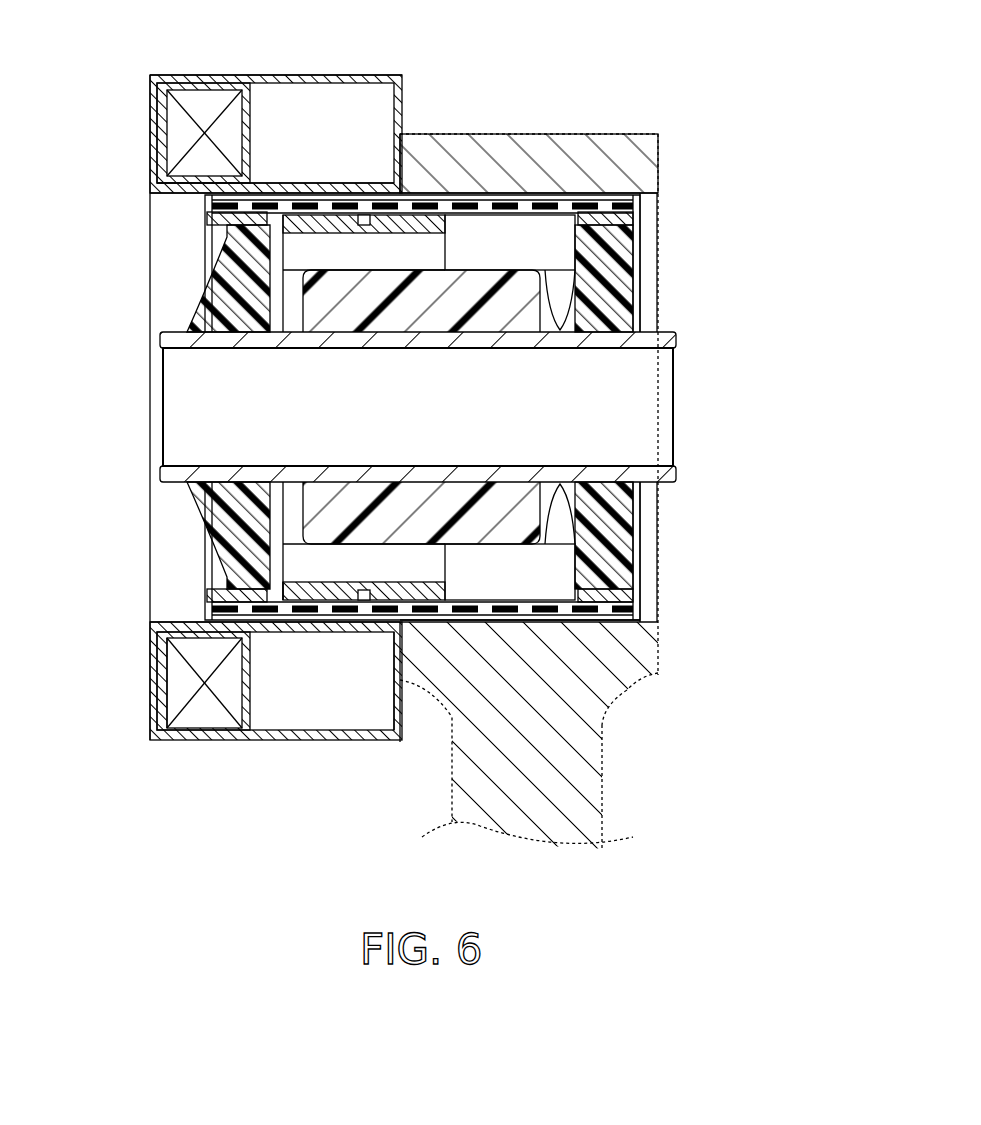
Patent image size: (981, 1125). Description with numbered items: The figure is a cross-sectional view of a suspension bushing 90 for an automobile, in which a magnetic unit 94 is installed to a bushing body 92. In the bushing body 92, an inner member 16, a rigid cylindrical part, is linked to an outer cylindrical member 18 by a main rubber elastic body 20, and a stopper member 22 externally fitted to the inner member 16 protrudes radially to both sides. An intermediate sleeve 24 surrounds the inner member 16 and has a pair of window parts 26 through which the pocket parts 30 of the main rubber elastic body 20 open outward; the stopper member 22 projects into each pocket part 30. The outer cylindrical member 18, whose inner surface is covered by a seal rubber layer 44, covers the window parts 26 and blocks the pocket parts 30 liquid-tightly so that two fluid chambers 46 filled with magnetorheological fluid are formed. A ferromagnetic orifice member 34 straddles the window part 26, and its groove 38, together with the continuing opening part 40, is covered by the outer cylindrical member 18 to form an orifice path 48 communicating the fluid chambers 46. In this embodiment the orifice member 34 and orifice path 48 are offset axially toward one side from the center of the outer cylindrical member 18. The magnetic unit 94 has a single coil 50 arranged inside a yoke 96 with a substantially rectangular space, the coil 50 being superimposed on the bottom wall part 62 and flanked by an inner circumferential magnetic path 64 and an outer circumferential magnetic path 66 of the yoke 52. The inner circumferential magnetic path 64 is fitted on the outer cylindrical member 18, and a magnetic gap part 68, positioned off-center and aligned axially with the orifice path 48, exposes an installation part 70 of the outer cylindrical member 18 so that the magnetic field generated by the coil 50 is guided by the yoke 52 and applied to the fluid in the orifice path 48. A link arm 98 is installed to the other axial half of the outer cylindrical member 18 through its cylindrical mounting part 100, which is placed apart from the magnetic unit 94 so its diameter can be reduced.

The inner member 16 is at (622, 470).
The outer cylindrical member 18 is at (527, 212).
The main rubber elastic body 20 is at (606, 302).
The stopper member 22 is at (490, 512).
The intermediate sleeve 24 is at (612, 212).
The window part 26 is at (566, 214).
The pocket part 30 is at (556, 318).
The orifice member 34 is at (276, 262).
The groove 38 is at (364, 212).
The opening part 40 is at (332, 584).
The seal rubber layer 44 is at (390, 313).
The fluid chamber 46 is at (516, 252).
The orifice path 48 is at (370, 216).
The coil 50 is at (182, 688).
The yoke 52 is at (165, 660).
The bottom wall part 62 is at (162, 136).
The inner circumferential magnetic path 64 is at (300, 190).
The outer circumferential magnetic path 66 is at (290, 76).
The magnetic gap part 68 is at (385, 626).
The installation part 70 is at (590, 622).
The suspension bushing 90 is at (695, 80).
The bushing body 92 is at (650, 254).
The magnetic unit 94 is at (244, 717).
The yoke 96 is at (267, 105).
The link arm 98 is at (614, 789).
The cylindrical mounting part 100 is at (622, 696).